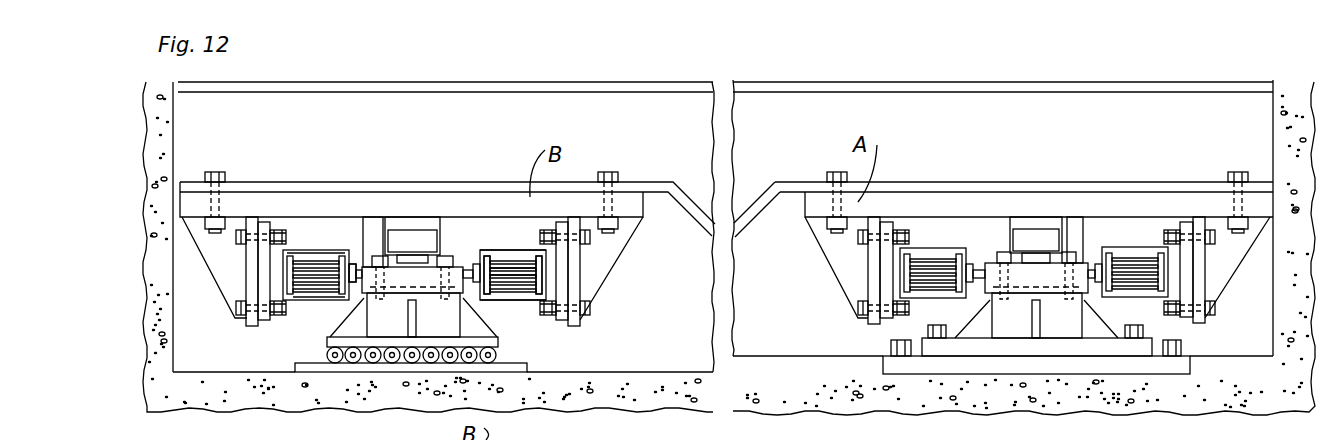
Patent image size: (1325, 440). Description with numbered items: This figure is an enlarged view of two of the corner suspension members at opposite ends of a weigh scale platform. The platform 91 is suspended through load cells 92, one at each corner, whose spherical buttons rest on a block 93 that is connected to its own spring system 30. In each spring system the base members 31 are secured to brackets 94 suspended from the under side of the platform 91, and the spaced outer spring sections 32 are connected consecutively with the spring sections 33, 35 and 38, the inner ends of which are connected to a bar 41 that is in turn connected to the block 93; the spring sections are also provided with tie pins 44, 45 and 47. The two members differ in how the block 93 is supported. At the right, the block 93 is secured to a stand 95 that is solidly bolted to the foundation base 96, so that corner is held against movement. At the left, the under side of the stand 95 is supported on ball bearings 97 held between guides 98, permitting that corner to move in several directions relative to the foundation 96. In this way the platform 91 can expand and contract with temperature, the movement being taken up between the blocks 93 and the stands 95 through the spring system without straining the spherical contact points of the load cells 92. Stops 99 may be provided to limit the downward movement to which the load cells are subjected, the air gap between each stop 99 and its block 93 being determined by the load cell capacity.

The leaf spring pack 30 is at (323, 247).
The base member 31 is at (263, 283).
The outer spring section 32 is at (495, 250).
The spring section 33 is at (512, 255).
The spring section 35 is at (522, 260).
The spring section 38 is at (492, 263).
The bar 41 is at (462, 300).
The tie pin 44 is at (347, 300).
The tie pin 45 is at (352, 295).
The tie pin 47 is at (287, 263).
The scale platform 91 is at (343, 152).
The load cell 92 is at (403, 222).
The block 93 is at (447, 272).
The bracket 94 is at (253, 253).
The stand 95 is at (422, 318).
The foundation base 96 is at (527, 367).
The ball bearings 97 is at (337, 346).
The guides 98 is at (500, 355).
The stop 99 is at (373, 219).